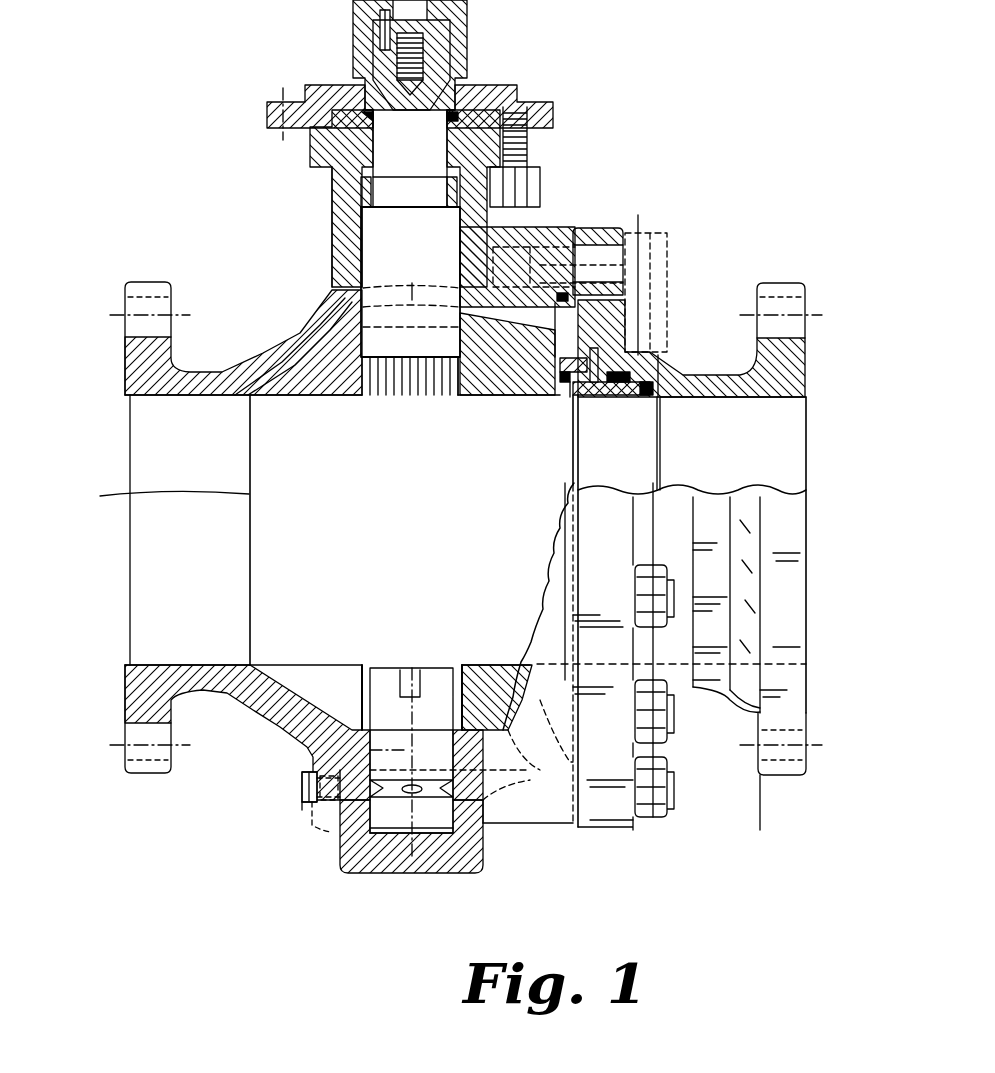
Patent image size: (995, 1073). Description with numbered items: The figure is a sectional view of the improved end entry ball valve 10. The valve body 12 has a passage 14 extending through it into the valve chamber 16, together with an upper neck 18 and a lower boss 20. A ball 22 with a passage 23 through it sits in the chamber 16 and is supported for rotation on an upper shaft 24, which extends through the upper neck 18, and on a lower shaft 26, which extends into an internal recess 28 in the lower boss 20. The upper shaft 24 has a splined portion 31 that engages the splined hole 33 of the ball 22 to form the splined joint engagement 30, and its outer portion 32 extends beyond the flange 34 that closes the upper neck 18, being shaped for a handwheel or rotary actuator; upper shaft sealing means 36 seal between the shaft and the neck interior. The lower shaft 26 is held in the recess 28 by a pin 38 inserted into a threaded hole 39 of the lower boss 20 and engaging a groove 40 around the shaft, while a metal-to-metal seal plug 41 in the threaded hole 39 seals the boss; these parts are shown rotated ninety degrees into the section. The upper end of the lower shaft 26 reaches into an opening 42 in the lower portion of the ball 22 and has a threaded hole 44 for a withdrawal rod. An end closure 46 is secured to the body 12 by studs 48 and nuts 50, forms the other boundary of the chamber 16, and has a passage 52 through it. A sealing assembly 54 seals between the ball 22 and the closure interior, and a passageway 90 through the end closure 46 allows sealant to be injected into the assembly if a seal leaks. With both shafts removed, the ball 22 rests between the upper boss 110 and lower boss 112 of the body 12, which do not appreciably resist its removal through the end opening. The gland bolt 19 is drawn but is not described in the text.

The valve 10 is at (202, 882).
The body 12 is at (270, 723).
The passage 14 is at (199, 595).
The valve chamber 16 is at (265, 378).
The upper neck 18 is at (360, 270).
The gland bolt 19 is at (353, 297).
The lower boss 20 is at (393, 873).
The ball 22 is at (100, 496).
The passage 23 is at (397, 560).
The upper shaft 24 is at (333, 300).
The lower shaft 26 is at (340, 867).
The internal recess 28 is at (425, 828).
The splined joint engagement 30 is at (385, 397).
The splined portion 31 is at (468, 397).
The outer portion 32 is at (470, 33).
The splined hole 33 is at (367, 397).
The flange 34 is at (550, 102).
The upper shaft sealing means 36 is at (500, 170).
The pin 38 is at (315, 820).
The threaded hole 39 is at (302, 778).
The groove 40 is at (450, 783).
The metal-to-metal seal plug 41 is at (300, 800).
The opening 42 is at (383, 668).
The hole 44 is at (413, 680).
The end closure 46 is at (683, 372).
The studs 48 is at (675, 780).
The nuts 50 is at (668, 815).
The passage 52 is at (742, 457).
The sealing assembly 54 is at (643, 399).
The passageway 90 is at (655, 295).
The upper boss 110 is at (322, 332).
The lower boss 112 is at (283, 670).